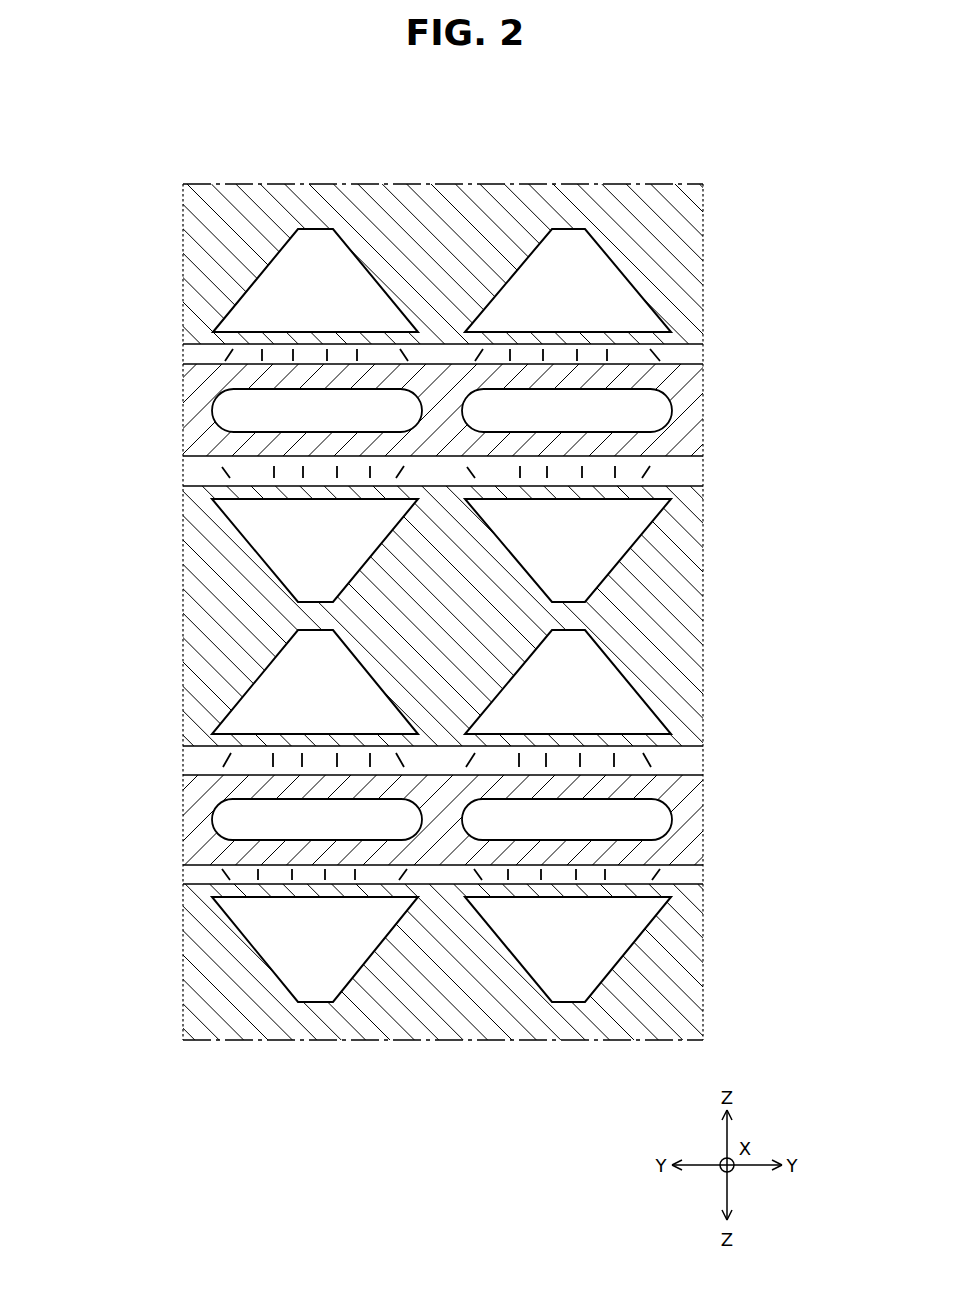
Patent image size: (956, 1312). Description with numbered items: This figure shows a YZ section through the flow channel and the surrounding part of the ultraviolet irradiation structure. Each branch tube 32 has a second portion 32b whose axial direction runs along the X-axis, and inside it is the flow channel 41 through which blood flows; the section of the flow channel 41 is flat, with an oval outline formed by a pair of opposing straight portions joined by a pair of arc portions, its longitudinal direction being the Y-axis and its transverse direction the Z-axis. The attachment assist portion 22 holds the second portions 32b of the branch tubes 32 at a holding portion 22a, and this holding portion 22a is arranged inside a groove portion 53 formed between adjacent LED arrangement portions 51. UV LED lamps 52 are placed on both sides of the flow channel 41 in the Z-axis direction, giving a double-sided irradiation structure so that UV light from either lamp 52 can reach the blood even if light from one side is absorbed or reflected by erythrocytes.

The LED arrangement portion 51 is at (412, 213).
The UV LED lamp 52 is at (292, 280).
The groove portion 53 is at (683, 353).
The flow channel 41 is at (300, 422).
The branch tube 32 is at (434, 614).
The second portion 32b is at (683, 436).
The holding portion 22a is at (519, 659).
The attachment assist portion 22 is at (683, 455).